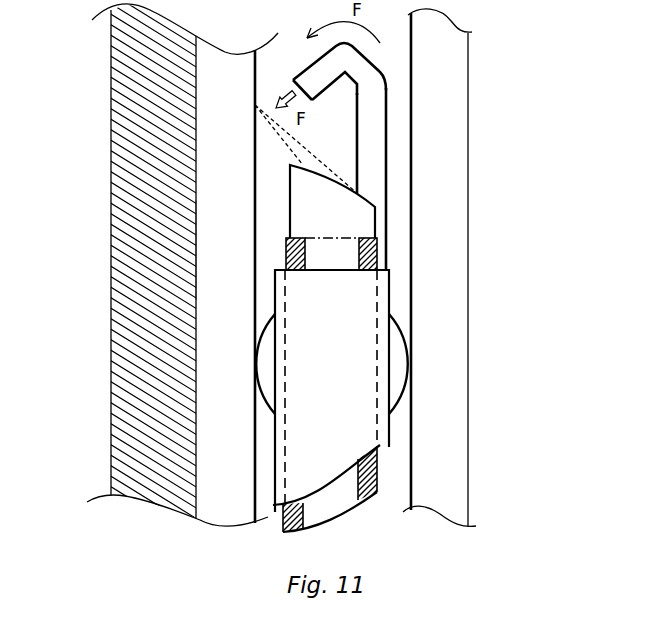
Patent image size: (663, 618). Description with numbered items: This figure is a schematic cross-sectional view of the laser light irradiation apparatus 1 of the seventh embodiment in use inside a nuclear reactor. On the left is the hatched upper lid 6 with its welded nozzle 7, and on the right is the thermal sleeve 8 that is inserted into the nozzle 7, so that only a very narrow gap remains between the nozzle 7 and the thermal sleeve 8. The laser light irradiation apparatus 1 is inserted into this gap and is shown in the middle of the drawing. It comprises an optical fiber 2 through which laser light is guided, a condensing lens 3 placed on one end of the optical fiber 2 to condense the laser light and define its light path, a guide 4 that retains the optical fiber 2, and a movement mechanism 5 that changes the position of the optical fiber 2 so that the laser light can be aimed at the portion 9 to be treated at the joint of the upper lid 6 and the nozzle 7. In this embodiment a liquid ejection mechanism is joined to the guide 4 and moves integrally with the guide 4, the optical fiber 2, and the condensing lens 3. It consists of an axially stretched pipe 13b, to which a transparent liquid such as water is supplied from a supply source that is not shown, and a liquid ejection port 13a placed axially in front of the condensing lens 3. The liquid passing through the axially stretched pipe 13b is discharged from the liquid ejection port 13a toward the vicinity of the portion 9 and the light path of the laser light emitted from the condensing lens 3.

The laser light irradiation apparatus 1 is at (389, 260).
The optical fiber 2 is at (353, 485).
The condensing lens 3 is at (360, 228).
The guide 4 is at (360, 295).
The movement mechanism 5 is at (395, 370).
The upper lid 6 is at (155, 193).
The nozzle 7 is at (208, 277).
The thermal sleeve 8 is at (442, 272).
The portion to be treated 9 is at (255, 105).
The liquid ejection port 13a is at (292, 86).
The axially stretched pipe 13b is at (370, 160).